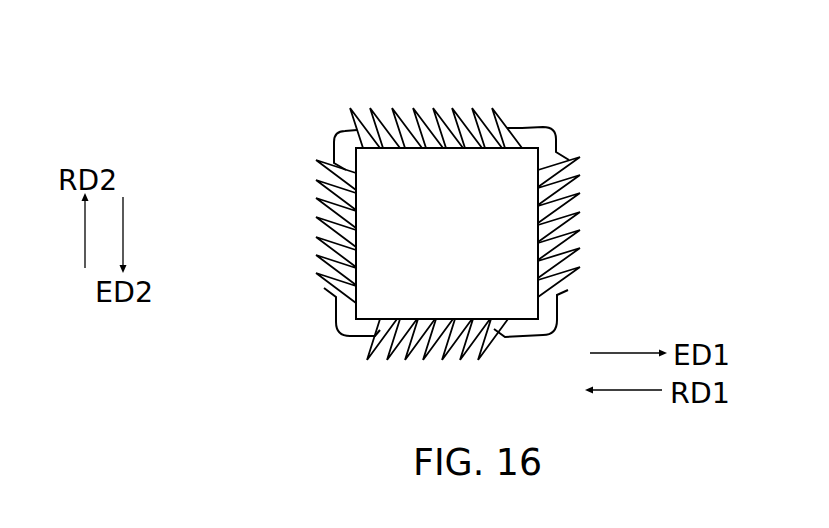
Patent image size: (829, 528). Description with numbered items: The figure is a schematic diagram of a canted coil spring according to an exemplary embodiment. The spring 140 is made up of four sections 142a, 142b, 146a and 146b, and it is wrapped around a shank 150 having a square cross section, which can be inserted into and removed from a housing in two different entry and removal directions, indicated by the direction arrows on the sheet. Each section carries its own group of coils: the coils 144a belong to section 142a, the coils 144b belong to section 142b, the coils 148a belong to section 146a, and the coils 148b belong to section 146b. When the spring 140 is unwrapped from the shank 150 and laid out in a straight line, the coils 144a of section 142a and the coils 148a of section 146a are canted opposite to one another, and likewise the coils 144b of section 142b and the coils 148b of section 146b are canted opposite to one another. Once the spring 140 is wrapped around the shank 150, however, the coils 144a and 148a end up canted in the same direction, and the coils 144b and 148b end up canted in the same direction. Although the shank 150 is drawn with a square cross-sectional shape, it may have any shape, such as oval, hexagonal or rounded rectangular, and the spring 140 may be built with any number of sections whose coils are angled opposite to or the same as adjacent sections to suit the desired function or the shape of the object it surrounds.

The spring 140 is at (459, 66).
The section 142a is at (484, 95).
The section 142b is at (600, 198).
The coils 144a is at (397, 107).
The coils 144b is at (577, 235).
The section 146a is at (407, 378).
The section 146b is at (307, 230).
The coils 148a is at (463, 357).
The coils 148b is at (338, 265).
The shank 150 is at (518, 167).